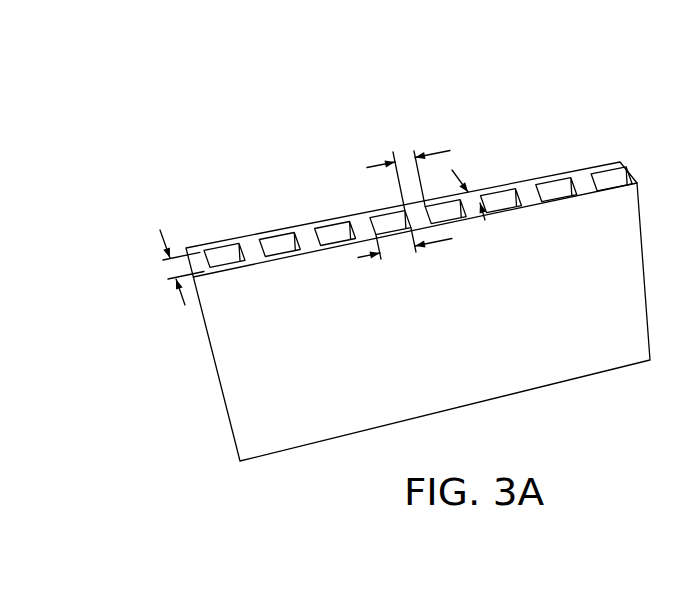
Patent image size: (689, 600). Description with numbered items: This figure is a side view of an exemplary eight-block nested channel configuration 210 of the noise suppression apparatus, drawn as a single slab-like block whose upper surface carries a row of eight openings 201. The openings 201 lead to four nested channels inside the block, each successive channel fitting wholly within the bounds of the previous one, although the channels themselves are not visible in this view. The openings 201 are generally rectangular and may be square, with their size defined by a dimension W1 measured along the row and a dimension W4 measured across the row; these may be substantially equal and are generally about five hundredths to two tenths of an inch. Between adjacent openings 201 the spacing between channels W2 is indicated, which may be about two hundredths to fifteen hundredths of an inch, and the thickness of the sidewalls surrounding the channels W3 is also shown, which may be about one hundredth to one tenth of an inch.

The eight-block nested channel configuration 210 is at (295, 180).
The openings 201 is at (223, 257).
The opening dimension W1 is at (405, 253).
The spacing between channels W2 is at (400, 158).
The sidewall thickness W3 is at (468, 193).
The opening dimension W4 is at (174, 265).